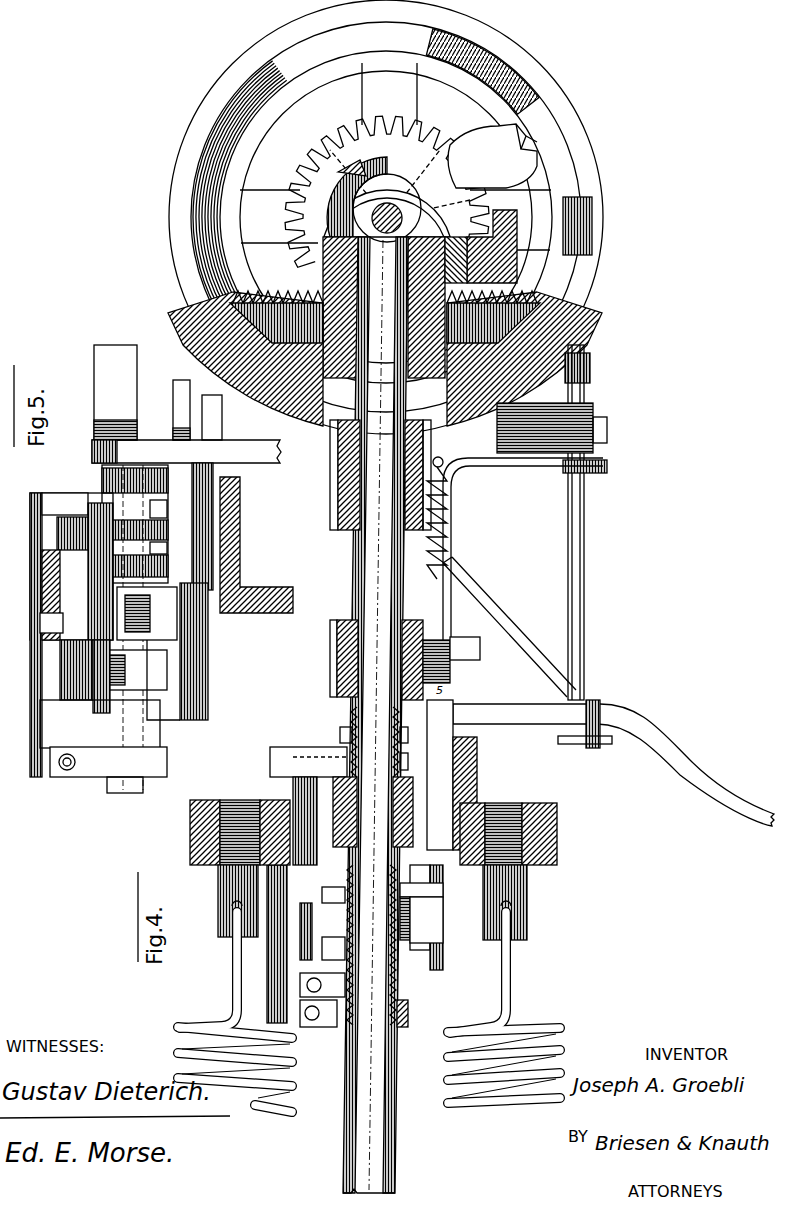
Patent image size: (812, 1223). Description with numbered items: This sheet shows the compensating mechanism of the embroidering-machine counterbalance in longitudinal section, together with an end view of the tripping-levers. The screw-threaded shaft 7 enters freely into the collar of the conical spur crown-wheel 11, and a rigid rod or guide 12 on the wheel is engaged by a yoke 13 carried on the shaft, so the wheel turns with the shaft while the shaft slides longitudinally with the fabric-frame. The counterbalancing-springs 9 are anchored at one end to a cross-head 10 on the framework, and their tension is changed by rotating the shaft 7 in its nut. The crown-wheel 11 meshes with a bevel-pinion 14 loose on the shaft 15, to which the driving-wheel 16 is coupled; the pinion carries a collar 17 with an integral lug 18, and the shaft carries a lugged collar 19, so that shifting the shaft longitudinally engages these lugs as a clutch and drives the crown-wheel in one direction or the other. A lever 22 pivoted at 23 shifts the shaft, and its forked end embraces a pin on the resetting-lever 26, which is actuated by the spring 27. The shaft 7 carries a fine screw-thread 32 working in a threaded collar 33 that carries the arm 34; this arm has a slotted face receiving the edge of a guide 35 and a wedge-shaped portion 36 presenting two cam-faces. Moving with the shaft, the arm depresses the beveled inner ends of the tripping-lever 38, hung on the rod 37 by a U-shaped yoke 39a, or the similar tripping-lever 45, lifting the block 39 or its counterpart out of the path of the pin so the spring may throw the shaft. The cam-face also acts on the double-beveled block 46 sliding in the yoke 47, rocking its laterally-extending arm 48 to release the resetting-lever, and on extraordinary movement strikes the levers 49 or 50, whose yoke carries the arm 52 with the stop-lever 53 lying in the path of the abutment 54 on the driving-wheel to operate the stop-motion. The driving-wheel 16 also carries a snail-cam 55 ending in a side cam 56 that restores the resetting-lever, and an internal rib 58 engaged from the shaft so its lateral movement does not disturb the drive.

In FIG. 4, the screw-threaded shaft 7 is at (362, 580).
In FIG. 4, the counterbalancing-springs 9 is at (176, 1023).
In FIG. 4, the cross-head 10 is at (203, 800).
In FIG. 4, the conical spur crown-wheel 11 is at (590, 333).
In FIG. 4, the rigid rod or guide 12 is at (586, 533).
In FIG. 4, the yoke 13 is at (605, 467).
In FIG. 4, the bevel-pinion 14 is at (333, 140).
In FIG. 4, the shaft 15 is at (403, 222).
In FIG. 4, the driving-wheel 16 is at (268, 42).
In FIG. 4, the collar 17 is at (292, 213).
In FIG. 4, the lug 18 is at (387, 198).
In FIG. 4, the lugged collar 19 is at (317, 167).
In FIG. 4, the lever 22 is at (481, 637).
In FIG. 5, the lever 22 is at (220, 410).
In FIG. 4, the pivot 23 is at (523, 462).
In FIG. 5, the resetting-lever 26 is at (174, 400).
In FIG. 4, the spring 27 is at (451, 510).
In FIG. 4, the fine screw-thread 32 is at (345, 900).
In FIG. 4, the threaded collar 33 is at (407, 780).
In FIG. 5, the arm 34 is at (71, 635).
In FIG. 5, the guide 35 is at (90, 503).
In FIG. 5, the wedge-shaped portion 36 is at (110, 663).
In FIG. 5, the rod 37 is at (127, 793).
In FIG. 5, the tripping-lever 38 is at (173, 660).
In FIG. 4, the block 39 is at (488, 143).
In FIG. 4, the U-shaped yoke 39a is at (310, 757).
In FIG. 5, the U-shaped yoke 39a is at (46, 669).
In FIG. 5, the tripping-lever 45 is at (164, 565).
In FIG. 5, the block 46 is at (178, 647).
In FIG. 4, the yoke 47 is at (448, 946).
In FIG. 5, the yoke 47 is at (222, 696).
In FIG. 5, the laterally-extending arm 48 is at (98, 390).
In FIG. 5, the lever 49 is at (180, 720).
In FIG. 5, the lever 50 is at (168, 535).
In FIG. 4, the arm 52 is at (647, 733).
In FIG. 4, the stop-lever 53 is at (540, 632).
In FIG. 4, the abutment 54 is at (590, 243).
In FIG. 4, the snail-cam 55 is at (274, 108).
In FIG. 4, the side cam 56 is at (535, 115).
In FIG. 4, the internal rib 58 is at (537, 152).